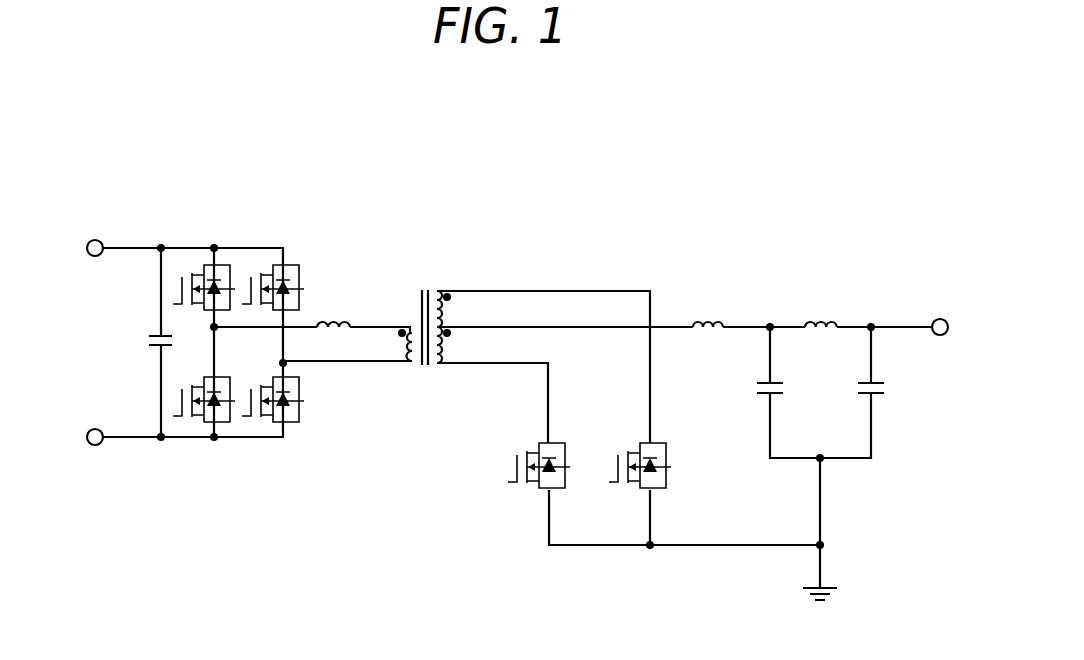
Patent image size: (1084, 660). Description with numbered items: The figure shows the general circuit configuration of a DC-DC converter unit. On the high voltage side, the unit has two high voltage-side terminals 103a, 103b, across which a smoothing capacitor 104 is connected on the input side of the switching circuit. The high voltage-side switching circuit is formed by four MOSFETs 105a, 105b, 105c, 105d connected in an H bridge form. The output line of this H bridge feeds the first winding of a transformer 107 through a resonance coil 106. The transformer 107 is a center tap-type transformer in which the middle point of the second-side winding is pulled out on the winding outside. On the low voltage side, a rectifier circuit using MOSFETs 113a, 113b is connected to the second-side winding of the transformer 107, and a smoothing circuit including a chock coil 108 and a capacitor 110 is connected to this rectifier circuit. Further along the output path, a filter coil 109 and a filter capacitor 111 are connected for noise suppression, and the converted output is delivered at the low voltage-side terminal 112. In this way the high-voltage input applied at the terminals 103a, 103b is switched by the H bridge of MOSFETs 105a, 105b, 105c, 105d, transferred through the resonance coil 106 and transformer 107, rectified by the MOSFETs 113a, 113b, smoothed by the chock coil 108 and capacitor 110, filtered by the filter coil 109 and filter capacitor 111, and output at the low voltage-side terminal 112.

The high voltage-side terminal 103a is at (91, 240).
The high voltage-side terminal 103b is at (93, 445).
The smoothing capacitor 104 is at (148, 328).
The MOSFET 105a is at (215, 262).
The MOSFET 105b is at (215, 440).
The MOSFET 105c is at (283, 262).
The MOSFET 105d is at (283, 440).
The resonance coil 106 is at (320, 315).
The transformer 107 is at (420, 283).
The chock coil 108 is at (718, 318).
The filter coil 109 is at (813, 318).
The capacitor 110 is at (757, 390).
The filter capacitor 111 is at (872, 400).
The low voltage-side terminal 112 is at (933, 321).
The MOSFET 113a is at (540, 487).
The MOSFET 113b is at (653, 480).